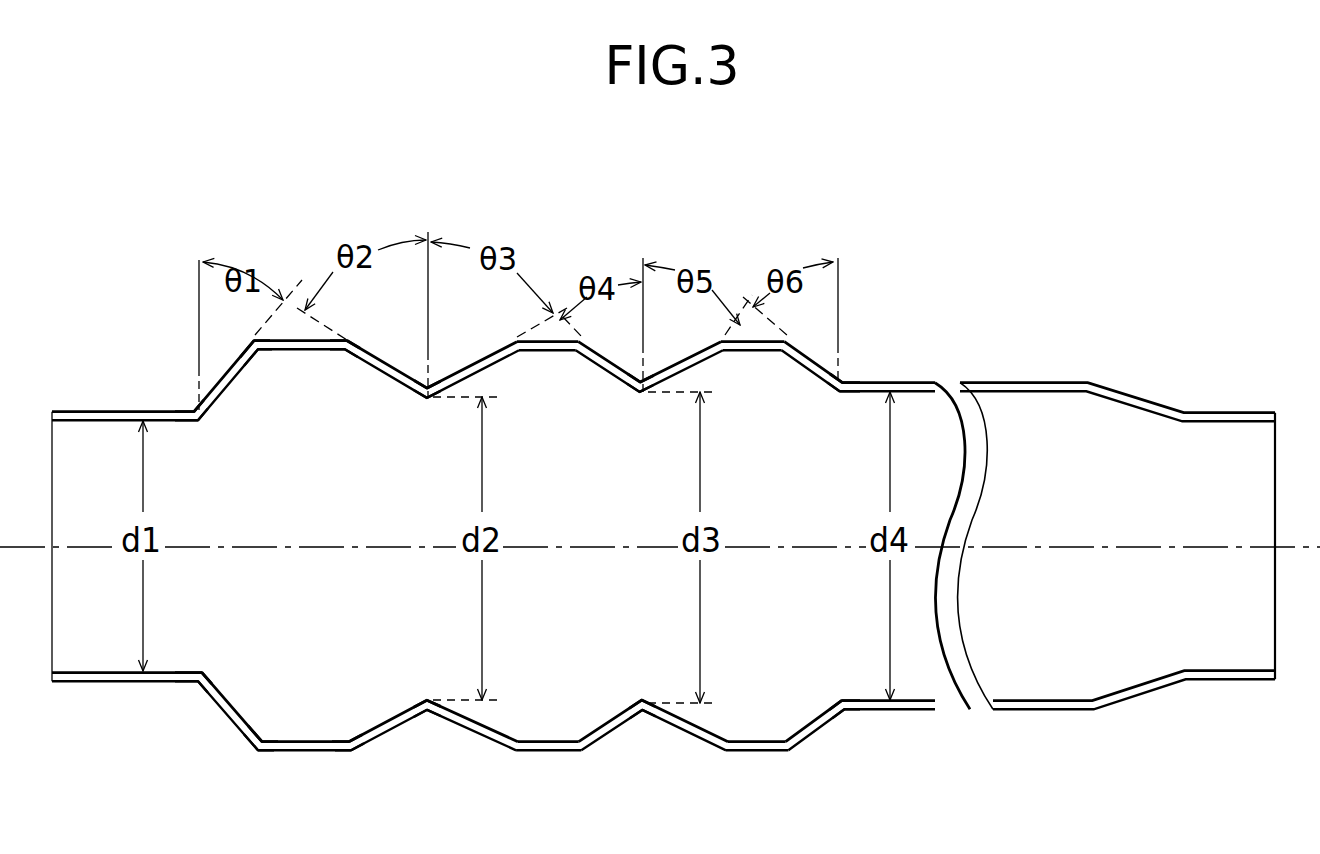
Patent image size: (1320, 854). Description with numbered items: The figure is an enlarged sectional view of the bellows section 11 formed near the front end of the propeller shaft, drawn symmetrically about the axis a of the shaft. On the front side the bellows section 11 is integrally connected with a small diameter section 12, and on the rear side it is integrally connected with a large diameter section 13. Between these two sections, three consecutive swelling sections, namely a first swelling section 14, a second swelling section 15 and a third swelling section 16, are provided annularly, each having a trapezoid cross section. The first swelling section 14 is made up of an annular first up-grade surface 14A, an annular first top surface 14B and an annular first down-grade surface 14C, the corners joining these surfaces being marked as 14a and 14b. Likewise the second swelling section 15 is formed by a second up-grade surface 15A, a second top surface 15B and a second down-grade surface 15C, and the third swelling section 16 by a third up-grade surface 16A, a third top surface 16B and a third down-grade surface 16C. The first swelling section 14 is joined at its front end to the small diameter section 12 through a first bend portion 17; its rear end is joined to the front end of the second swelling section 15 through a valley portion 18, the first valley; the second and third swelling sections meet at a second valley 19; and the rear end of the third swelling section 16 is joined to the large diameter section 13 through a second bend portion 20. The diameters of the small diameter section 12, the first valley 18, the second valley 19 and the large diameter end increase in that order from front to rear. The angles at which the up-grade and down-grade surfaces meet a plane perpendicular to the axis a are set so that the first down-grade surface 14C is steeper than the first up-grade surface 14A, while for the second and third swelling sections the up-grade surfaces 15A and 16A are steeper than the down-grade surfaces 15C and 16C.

The bellows section 11 is at (812, 222).
The small diameter section 12 is at (97, 410).
The large diameter section 13 is at (1030, 381).
The first swelling section 14 is at (313, 285).
The first up-grade surface 14A is at (226, 378).
The first top surface 14B is at (300, 351).
The first down-grade surface 14C is at (384, 358).
The corner between walls 14A and 14B 14a is at (259, 356).
The corner between walls 14B and 14C 14b is at (346, 356).
The second swelling section 15 is at (558, 270).
The second up-grade surface 15A is at (483, 356).
The second top surface 15B is at (543, 352).
The second down-grade surface 15C is at (606, 362).
The third swelling section 16 is at (733, 280).
The third up-grade surface 16A is at (693, 356).
The third top surface 16B is at (747, 352).
The third down-grade surface 16C is at (806, 362).
The first bend portion 17 is at (192, 410).
The valley portion 18 is at (430, 400).
The second valley 19 is at (644, 398).
The second bend portion 20 is at (843, 382).
The axis a is at (228, 545).